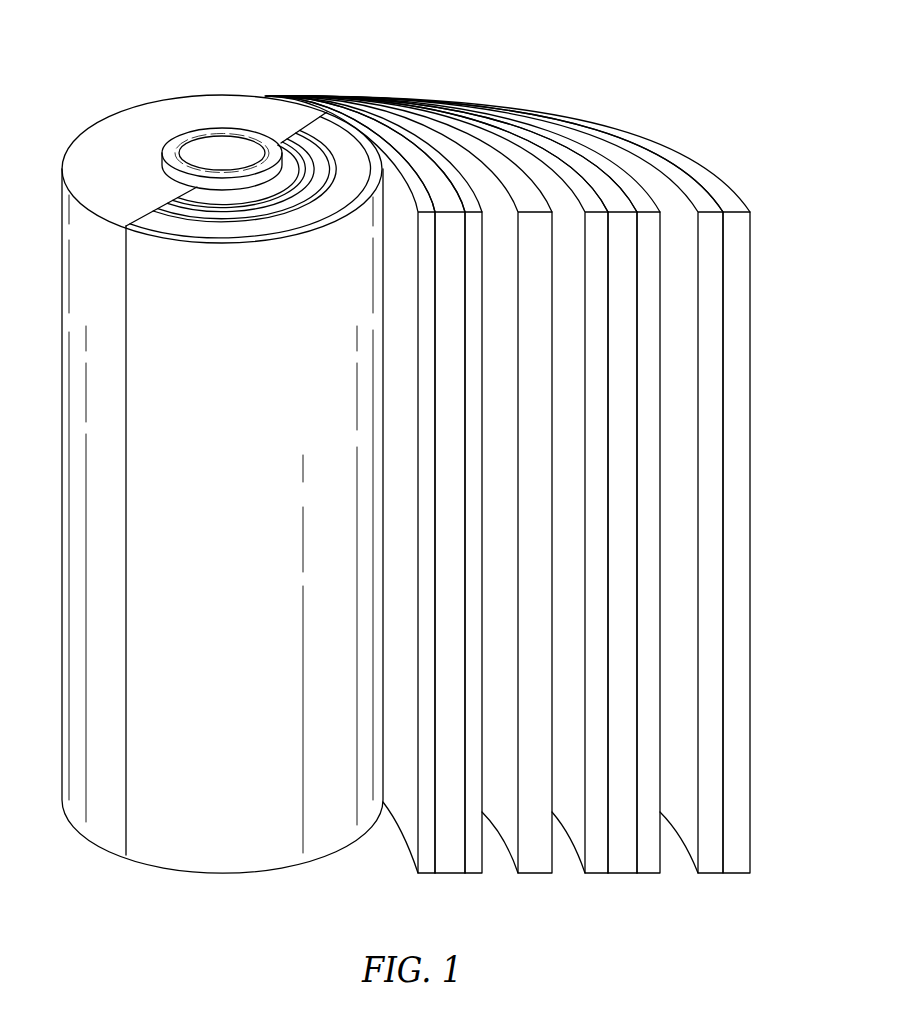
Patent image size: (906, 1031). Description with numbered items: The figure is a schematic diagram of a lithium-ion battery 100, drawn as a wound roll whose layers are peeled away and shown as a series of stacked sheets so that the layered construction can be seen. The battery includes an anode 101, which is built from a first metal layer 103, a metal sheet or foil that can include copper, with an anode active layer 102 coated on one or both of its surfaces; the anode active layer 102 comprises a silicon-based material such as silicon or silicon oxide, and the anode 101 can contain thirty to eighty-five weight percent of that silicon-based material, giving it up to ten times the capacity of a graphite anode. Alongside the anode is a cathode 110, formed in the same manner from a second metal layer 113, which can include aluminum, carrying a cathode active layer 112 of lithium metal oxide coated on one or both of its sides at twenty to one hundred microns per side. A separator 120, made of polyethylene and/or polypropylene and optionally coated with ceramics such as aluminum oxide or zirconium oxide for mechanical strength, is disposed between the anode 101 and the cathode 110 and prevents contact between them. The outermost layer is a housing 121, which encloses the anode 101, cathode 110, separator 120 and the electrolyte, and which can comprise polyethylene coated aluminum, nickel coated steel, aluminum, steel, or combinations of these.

The lithium-ion battery 100 is at (317, 24).
The anode 101 is at (391, 488).
The anode active layer 102 is at (427, 218).
The first metal layer 103 is at (449, 216).
The cathode 110 is at (489, 499).
The cathode active layer 112 is at (597, 216).
The second metal layer 113 is at (622, 218).
The separator 120 is at (538, 877).
The housing 121 is at (738, 877).